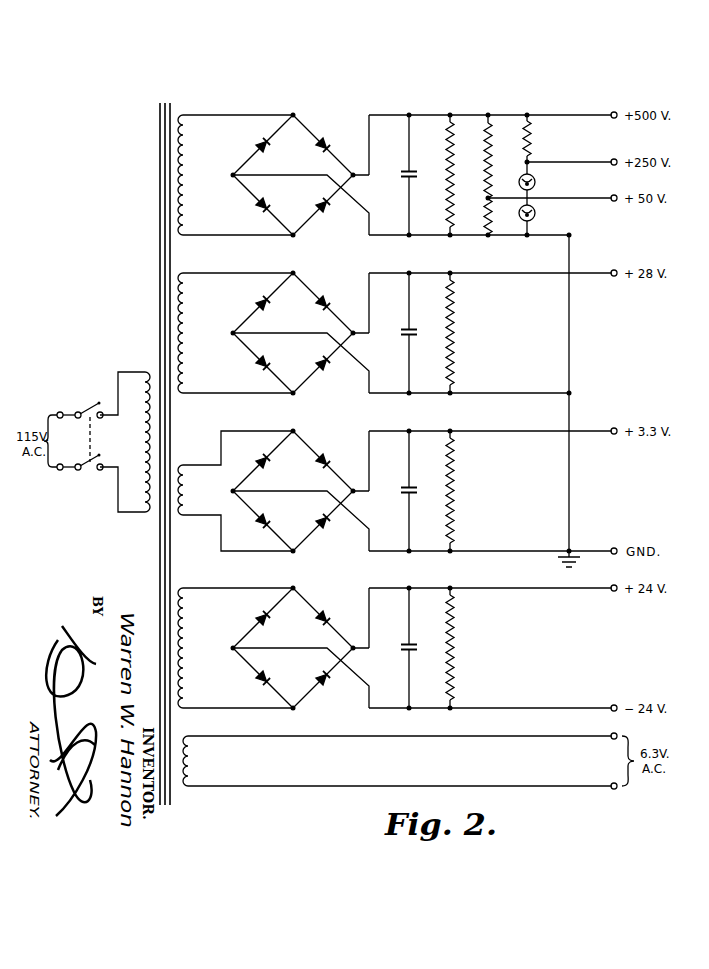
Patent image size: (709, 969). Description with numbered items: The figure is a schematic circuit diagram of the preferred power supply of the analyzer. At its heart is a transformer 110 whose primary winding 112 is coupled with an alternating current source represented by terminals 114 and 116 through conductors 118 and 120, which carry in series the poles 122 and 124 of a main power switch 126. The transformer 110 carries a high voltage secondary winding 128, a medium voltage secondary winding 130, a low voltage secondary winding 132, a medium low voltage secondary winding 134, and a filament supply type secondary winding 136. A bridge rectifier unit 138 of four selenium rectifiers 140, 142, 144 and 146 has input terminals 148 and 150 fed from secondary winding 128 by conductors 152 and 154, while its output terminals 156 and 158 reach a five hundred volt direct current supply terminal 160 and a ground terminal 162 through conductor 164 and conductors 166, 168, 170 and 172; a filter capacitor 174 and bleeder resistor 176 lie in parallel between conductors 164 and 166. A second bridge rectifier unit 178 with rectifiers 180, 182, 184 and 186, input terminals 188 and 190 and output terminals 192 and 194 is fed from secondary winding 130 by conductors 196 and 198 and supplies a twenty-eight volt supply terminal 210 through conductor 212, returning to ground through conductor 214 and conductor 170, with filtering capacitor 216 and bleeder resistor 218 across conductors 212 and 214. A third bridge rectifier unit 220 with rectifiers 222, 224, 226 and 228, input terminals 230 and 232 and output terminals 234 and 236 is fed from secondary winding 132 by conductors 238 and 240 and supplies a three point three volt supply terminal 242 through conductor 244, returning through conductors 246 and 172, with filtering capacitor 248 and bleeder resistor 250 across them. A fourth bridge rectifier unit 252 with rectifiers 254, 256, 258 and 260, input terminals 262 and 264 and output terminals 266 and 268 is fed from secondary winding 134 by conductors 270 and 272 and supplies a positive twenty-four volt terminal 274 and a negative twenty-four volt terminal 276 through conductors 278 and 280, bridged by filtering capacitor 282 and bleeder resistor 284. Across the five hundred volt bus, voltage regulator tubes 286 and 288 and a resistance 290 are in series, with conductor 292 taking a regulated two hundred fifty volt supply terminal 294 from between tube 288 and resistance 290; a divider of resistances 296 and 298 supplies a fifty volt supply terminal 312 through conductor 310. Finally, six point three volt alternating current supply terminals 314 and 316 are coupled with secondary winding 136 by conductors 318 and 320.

The transformer 110 is at (158, 211).
The primary winding 112 is at (131, 442).
The terminal 114 is at (60, 411).
The terminal 116 is at (60, 470).
The conductor 118 is at (125, 372).
The conductor 120 is at (125, 512).
The pole 122 is at (97, 404).
The pole 124 is at (79, 469).
The main power switch 126 is at (92, 436).
The high voltage secondary winding 128 is at (187, 170).
The medium voltage secondary winding 130 is at (186, 357).
The low voltage secondary winding 132 is at (186, 498).
The medium low voltage secondary winding 134 is at (190, 645).
The filament supply type secondary winding 136 is at (192, 764).
The bridge rectifier unit 138 is at (248, 160).
The selenium rectifier 140 is at (267, 150).
The selenium rectifier 142 is at (325, 141).
The selenium rectifier 144 is at (327, 208).
The selenium rectifier 146 is at (267, 202).
The input terminal 148 is at (294, 113).
The input terminal 150 is at (295, 236).
The conductor 152 is at (228, 114).
The conductor 154 is at (230, 235).
The output terminal 156 is at (353, 171).
The output terminal 158 is at (224, 185).
The 500 volt direct current supply terminal 160 is at (614, 112).
The ground terminal 162 is at (616, 548).
The conductor 164 is at (465, 114).
The conductor 166 is at (376, 236).
The conductor 168 is at (572, 315).
The conductor 170 is at (572, 482).
The conductor 172 is at (594, 549).
The filter capacitor 174 is at (403, 170).
The bleeder resistor 176 is at (446, 164).
The bridge rectifier unit 178 is at (244, 318).
The rectifier 180 is at (268, 308).
The rectifier 182 is at (326, 298).
The rectifier 184 is at (327, 366).
The rectifier 186 is at (260, 367).
The input terminal 188 is at (295, 273).
The input terminal 190 is at (296, 393).
The output terminal 192 is at (354, 328).
The output terminal 194 is at (222, 349).
The conductor 196 is at (234, 272).
The conductor 198 is at (206, 393).
The 28 volt direct current supply terminal 210 is at (614, 269).
The conductor 212 is at (430, 272).
The conductor 214 is at (428, 394).
The filtering capacitor 216 is at (406, 328).
The bleeder resistor 218 is at (455, 330).
The bridge rectifier unit 220 is at (252, 478).
The rectifier 222 is at (270, 469).
The rectifier 224 is at (330, 456).
The rectifier 226 is at (328, 526).
The rectifier 228 is at (268, 517).
The input terminal 230 is at (297, 430).
The input terminal 232 is at (296, 552).
The output terminal 234 is at (354, 487).
The output terminal 236 is at (222, 502).
The conductor 238 is at (246, 431).
The conductor 240 is at (246, 551).
The 3.3 volt direct current supply terminal 242 is at (614, 428).
The conductor 244 is at (422, 431).
The conductor 246 is at (430, 552).
The filtering capacitor 248 is at (406, 486).
The bleeder resistor 250 is at (455, 490).
The bridge rectifier unit 252 is at (258, 626).
The rectifier 254 is at (270, 623).
The rectifier 256 is at (329, 614).
The rectifier 258 is at (329, 682).
The rectifier 260 is at (269, 674).
The input terminal 262 is at (297, 588).
The input terminal 264 is at (296, 709).
The output terminal 266 is at (356, 644).
The output terminal 268 is at (233, 652).
The conductor 270 is at (228, 588).
The conductor 272 is at (234, 709).
The positive 24 volt direct current supply terminal 274 is at (622, 577).
The negative 24 volt supply terminal 276 is at (614, 705).
The conductor 278 is at (503, 587).
The conductor 280 is at (510, 707).
The filtering capacitor 282 is at (407, 646).
The bleeder resistor 284 is at (455, 645).
The voltage regulator tube 286 is at (536, 215).
The voltage regulator tube 288 is at (536, 183).
The resistance 290 is at (531, 143).
The conductor 292 is at (552, 161).
The 250 volt regulated direct current supply terminal 294 is at (615, 159).
The resistance 296 is at (492, 155).
The resistance 298 is at (484, 226).
The conductor 310 is at (567, 197).
The 50 volt direct current supply terminal 312 is at (617, 195).
The 6.3 volt alternating current supply terminal 314 is at (614, 733).
The 6.3 volt alternating current supply terminal 316 is at (614, 783).
The conductor 318 is at (408, 737).
The conductor 320 is at (462, 786).